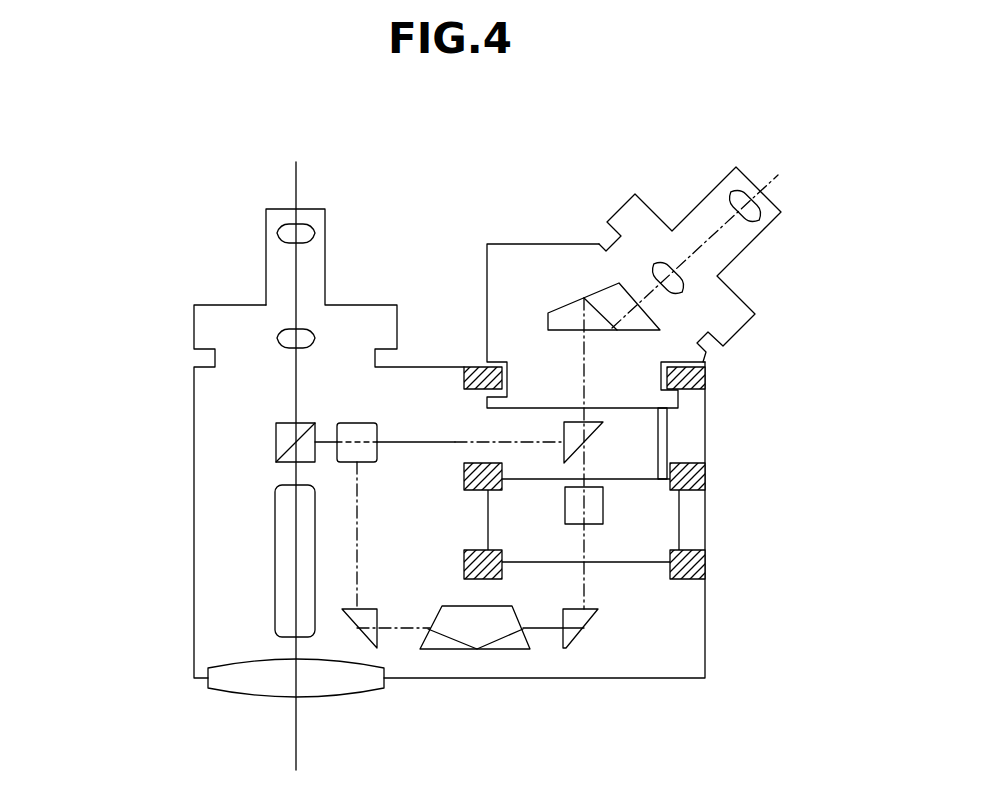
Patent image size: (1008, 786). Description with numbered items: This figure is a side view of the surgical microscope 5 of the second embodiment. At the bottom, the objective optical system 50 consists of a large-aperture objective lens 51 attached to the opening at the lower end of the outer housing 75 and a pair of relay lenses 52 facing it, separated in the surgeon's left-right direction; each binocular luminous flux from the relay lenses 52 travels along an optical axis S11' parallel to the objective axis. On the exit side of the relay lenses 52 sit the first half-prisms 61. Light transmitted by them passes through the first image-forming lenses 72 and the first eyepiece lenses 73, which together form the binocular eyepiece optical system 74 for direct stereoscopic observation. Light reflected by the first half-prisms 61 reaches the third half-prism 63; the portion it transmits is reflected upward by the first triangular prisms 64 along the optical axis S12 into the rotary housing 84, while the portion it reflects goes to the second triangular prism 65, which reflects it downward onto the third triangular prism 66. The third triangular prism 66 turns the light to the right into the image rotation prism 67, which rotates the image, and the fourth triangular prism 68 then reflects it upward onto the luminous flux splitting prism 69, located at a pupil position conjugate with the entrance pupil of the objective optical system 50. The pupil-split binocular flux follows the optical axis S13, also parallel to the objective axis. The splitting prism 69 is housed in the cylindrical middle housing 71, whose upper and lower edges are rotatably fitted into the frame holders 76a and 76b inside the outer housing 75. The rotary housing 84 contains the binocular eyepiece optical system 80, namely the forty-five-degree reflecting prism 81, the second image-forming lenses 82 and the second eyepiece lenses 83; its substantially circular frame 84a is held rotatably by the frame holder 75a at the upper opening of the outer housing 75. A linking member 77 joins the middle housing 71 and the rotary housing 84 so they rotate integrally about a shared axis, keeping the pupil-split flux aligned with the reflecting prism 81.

The surgical microscope 5 is at (207, 157).
The objective optical system 50 is at (112, 580).
The objective lens 51 is at (212, 690).
The relay lenses 52 is at (275, 592).
The first half-prisms 61 is at (276, 440).
The third half-prism 63 is at (359, 348).
The second triangular prism 65 is at (358, 422).
The first triangular prisms 64 is at (603, 437).
The third triangular prism 66 is at (380, 637).
The image rotation prism 67 is at (510, 650).
The fourth triangular prism 68 is at (575, 642).
The luminous flux splitting prism 69 is at (603, 510).
The middle housing 71 is at (680, 533).
The first image-forming lenses 72 is at (277, 338).
The first eyepiece lenses 73 is at (277, 233).
The binocular eyepiece optical system 74 is at (118, 217).
The outer housing 75 is at (194, 514).
The frame holder 75a is at (478, 367).
The frame holder 76a is at (464, 477).
The frame holder 76b is at (464, 567).
The linking member 77 is at (667, 445).
The binocular eyepiece optical system 80 is at (570, 106).
The 45° reflecting prism 81 is at (617, 282).
The second image-forming lenses 82 is at (663, 262).
The second eyepiece lenses 83 is at (738, 188).
The rotary housing 84 is at (510, 244).
The frame 84a is at (690, 390).
The optical axis S11' is at (251, 772).
The optical axis S12 is at (585, 340).
The optical axis S13 is at (587, 460).